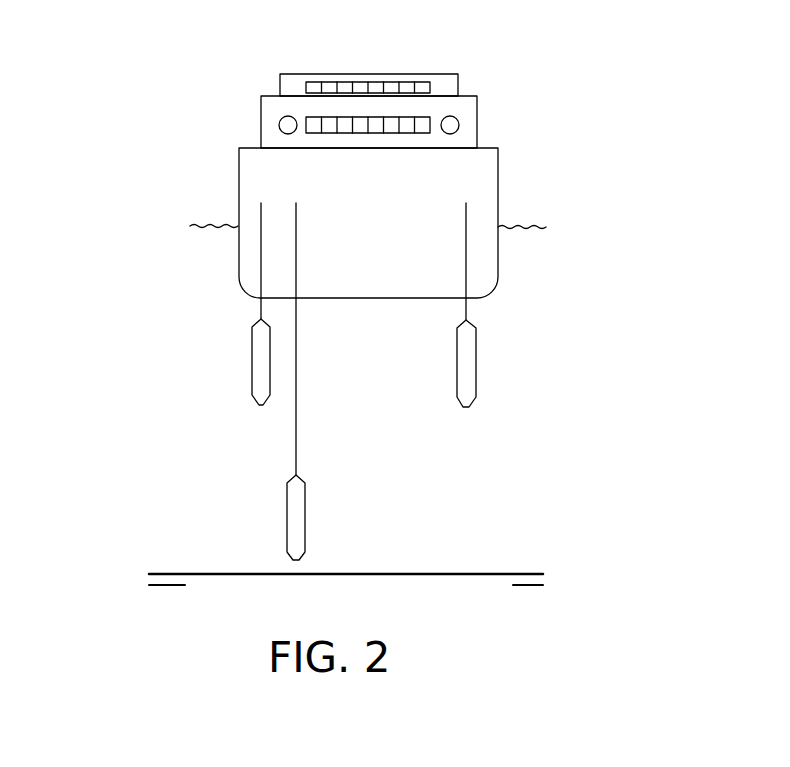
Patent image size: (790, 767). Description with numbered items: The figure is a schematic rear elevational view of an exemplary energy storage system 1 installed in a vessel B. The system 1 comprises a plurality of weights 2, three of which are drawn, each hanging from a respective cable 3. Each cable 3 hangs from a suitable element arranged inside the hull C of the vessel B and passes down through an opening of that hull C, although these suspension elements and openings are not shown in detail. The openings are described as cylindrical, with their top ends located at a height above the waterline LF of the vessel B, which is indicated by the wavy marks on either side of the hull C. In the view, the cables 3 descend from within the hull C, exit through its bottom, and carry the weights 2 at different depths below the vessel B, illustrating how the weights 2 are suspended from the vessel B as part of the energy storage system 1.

The energy storage system 1 is at (110, 120).
The weight 2 is at (255, 372).
The cable 3 is at (466, 270).
The vessel B is at (511, 127).
The hull C is at (478, 187).
The waterline LF is at (353, 226).